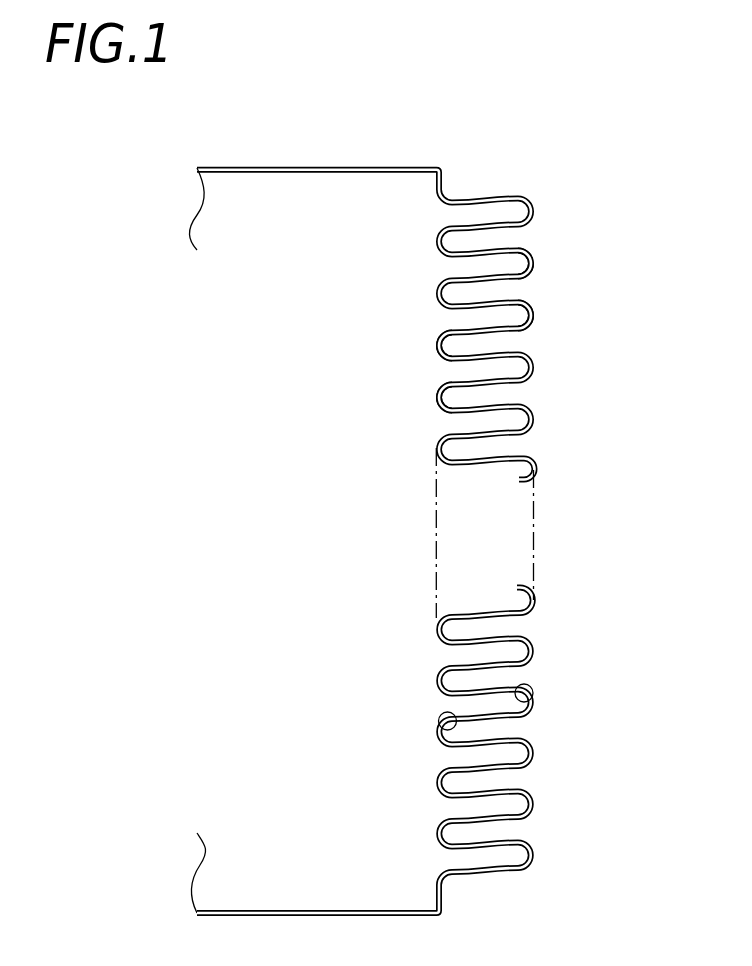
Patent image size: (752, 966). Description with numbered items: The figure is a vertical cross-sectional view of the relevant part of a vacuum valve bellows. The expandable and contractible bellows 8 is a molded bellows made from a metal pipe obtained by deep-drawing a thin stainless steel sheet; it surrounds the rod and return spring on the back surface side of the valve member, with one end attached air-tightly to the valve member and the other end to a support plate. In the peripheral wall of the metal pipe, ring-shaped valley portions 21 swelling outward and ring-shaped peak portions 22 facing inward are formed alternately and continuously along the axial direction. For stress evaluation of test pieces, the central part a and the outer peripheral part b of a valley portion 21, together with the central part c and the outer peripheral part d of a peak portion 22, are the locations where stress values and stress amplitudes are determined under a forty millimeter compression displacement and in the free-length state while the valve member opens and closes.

The bellows 8 is at (553, 188).
The valley portion 21 is at (438, 390).
The peak portion 22 is at (535, 318).
The central part of valley portion a is at (441, 741).
The outer peripheral part of valley portion b is at (444, 714).
The central part of peak portion c is at (524, 684).
The outer peripheral part of peak portion d is at (533, 705).